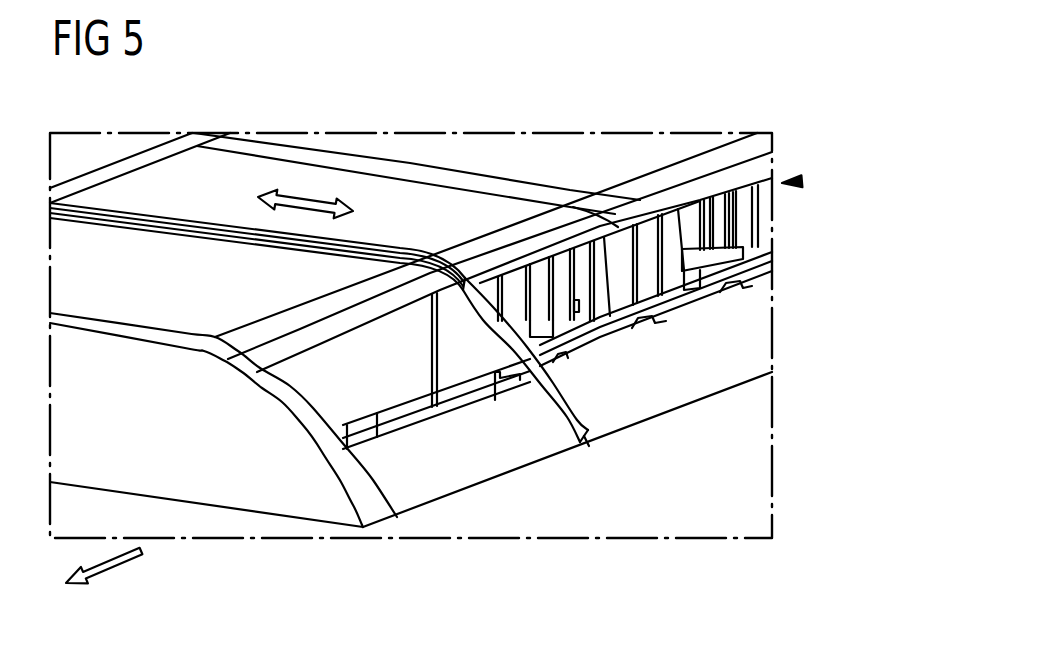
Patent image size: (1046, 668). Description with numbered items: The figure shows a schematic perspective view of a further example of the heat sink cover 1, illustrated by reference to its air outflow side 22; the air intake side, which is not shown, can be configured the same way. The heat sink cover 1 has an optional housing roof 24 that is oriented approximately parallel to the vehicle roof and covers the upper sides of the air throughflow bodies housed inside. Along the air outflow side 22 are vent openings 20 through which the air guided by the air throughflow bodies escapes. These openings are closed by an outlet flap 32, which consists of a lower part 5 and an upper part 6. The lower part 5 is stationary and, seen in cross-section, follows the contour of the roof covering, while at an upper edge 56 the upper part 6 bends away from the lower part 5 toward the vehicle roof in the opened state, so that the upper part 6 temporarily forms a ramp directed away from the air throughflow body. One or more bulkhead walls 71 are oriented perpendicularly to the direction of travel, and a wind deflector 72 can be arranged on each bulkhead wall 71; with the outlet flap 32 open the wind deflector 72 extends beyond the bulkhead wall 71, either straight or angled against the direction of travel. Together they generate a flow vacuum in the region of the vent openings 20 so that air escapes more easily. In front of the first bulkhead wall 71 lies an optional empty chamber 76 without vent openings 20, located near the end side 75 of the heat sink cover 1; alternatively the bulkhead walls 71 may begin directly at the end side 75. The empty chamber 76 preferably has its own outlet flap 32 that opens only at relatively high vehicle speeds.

The heat sink cover 1 is at (768, 102).
The vent openings 20 is at (707, 200).
The air outflow side 22 is at (802, 181).
The housing roof 24 is at (509, 141).
The outlet flap 32 is at (557, 389).
The lower part 5 is at (683, 395).
The upper part 6 is at (707, 295).
The upper edge 56 is at (490, 400).
The bulkhead wall 71 is at (440, 343).
The wind deflector 72 is at (587, 440).
The end side 75 is at (124, 356).
The empty chamber 76 is at (323, 357).